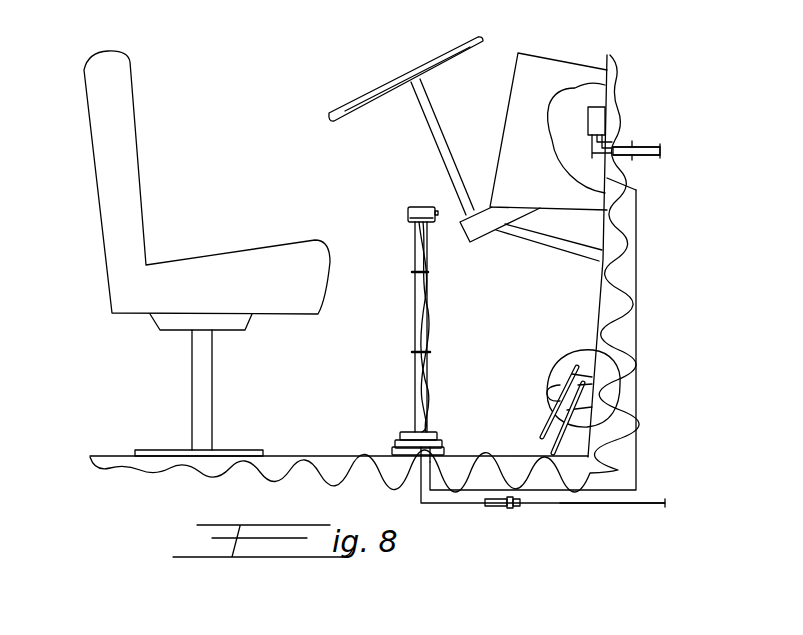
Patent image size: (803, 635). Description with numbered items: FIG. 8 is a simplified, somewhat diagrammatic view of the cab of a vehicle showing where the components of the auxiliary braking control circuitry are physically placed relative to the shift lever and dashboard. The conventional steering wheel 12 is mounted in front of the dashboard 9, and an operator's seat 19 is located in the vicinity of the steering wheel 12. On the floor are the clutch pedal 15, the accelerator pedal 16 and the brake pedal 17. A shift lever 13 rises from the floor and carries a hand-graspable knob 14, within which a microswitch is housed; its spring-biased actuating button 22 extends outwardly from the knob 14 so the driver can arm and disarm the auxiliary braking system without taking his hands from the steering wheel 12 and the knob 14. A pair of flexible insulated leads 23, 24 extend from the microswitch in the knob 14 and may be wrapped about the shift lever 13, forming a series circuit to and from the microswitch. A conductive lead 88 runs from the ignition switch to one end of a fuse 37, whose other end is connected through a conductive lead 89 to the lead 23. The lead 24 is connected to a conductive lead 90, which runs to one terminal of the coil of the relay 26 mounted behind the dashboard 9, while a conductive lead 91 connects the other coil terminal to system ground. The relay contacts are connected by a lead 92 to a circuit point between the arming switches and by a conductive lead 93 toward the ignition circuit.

The dashboard 9 is at (513, 75).
The steering wheel 12 is at (417, 72).
The shift lever 13 is at (417, 303).
The hand-graspable knob 14 is at (408, 215).
The clutch pedal 15 is at (577, 367).
The accelerator pedal 16 is at (570, 422).
The brake pedal 17 is at (583, 368).
The operator's seat 19 is at (140, 228).
The spring-biased actuating button 22 is at (438, 213).
The lead 23 is at (432, 265).
The lead 24 is at (432, 295).
The relay 26 is at (595, 118).
The fuse 37 is at (500, 505).
The conductive lead 88 is at (580, 503).
The conductive lead 89 is at (453, 503).
The conductive lead 90 is at (635, 265).
The conductive lead 91 is at (637, 163).
The lead 92 is at (623, 142).
The conductive lead 93 is at (627, 158).